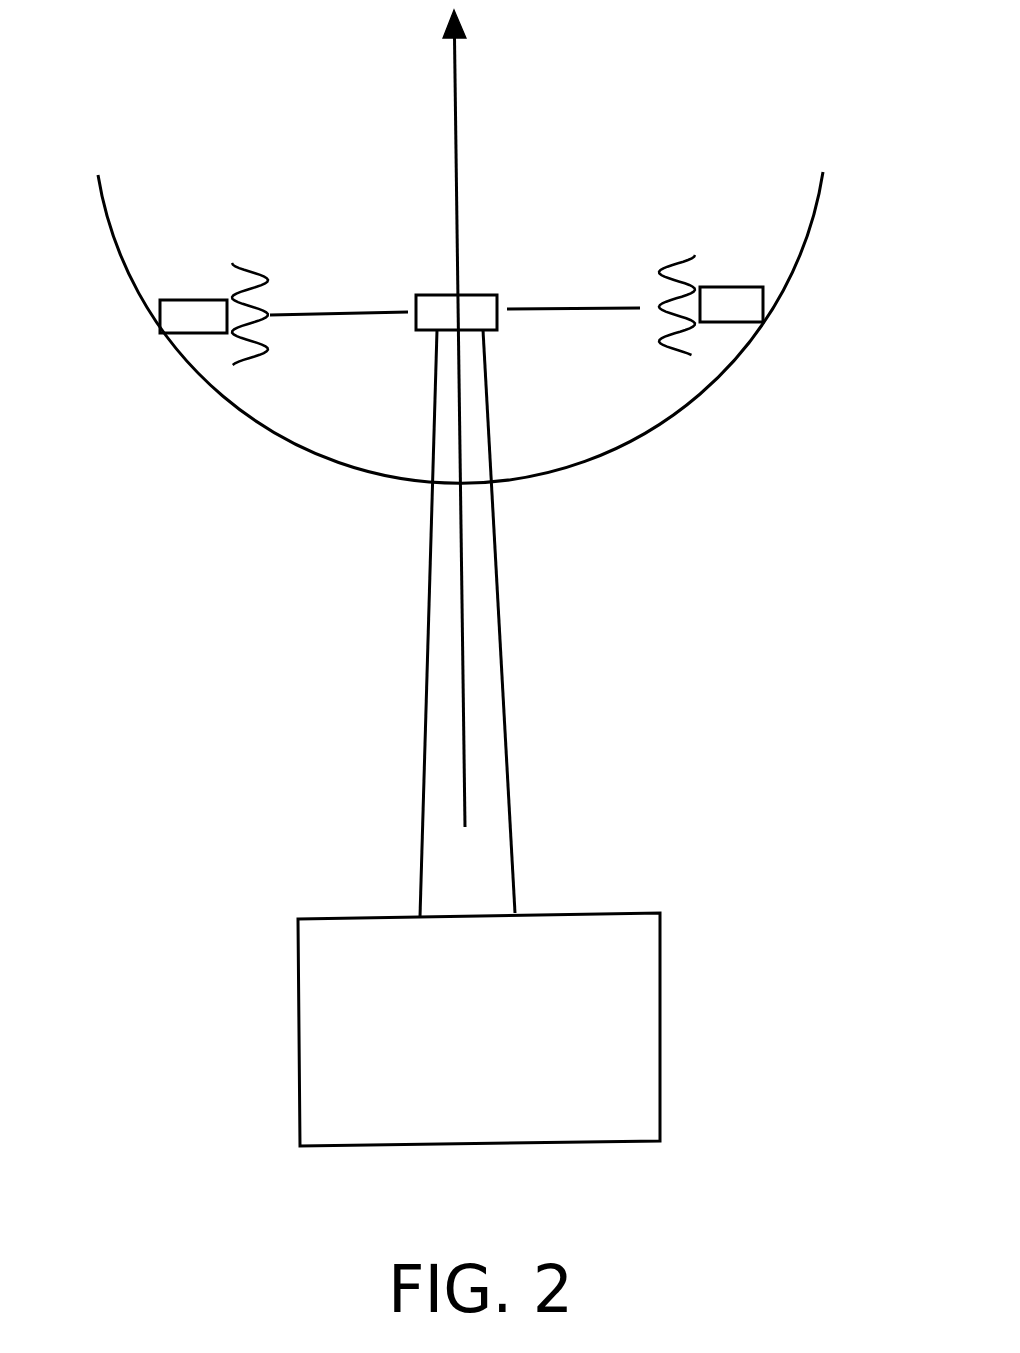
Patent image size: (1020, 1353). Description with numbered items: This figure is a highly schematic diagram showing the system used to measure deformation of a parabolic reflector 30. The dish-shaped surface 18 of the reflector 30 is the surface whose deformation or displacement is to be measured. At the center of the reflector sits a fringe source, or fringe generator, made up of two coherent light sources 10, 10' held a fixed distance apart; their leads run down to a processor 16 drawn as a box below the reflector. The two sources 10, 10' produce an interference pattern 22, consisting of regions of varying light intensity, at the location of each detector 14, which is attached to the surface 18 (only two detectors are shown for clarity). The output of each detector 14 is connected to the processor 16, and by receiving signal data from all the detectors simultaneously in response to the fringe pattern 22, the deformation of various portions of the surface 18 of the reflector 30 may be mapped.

The coherent light source 10 is at (455, 287).
The coherent light source 10' is at (466, 623).
The detector 14 is at (185, 300).
The processor 16 is at (628, 1065).
The surface 18 is at (580, 457).
The interference pattern 22 is at (252, 382).
The parabolic reflector 30 is at (252, 545).